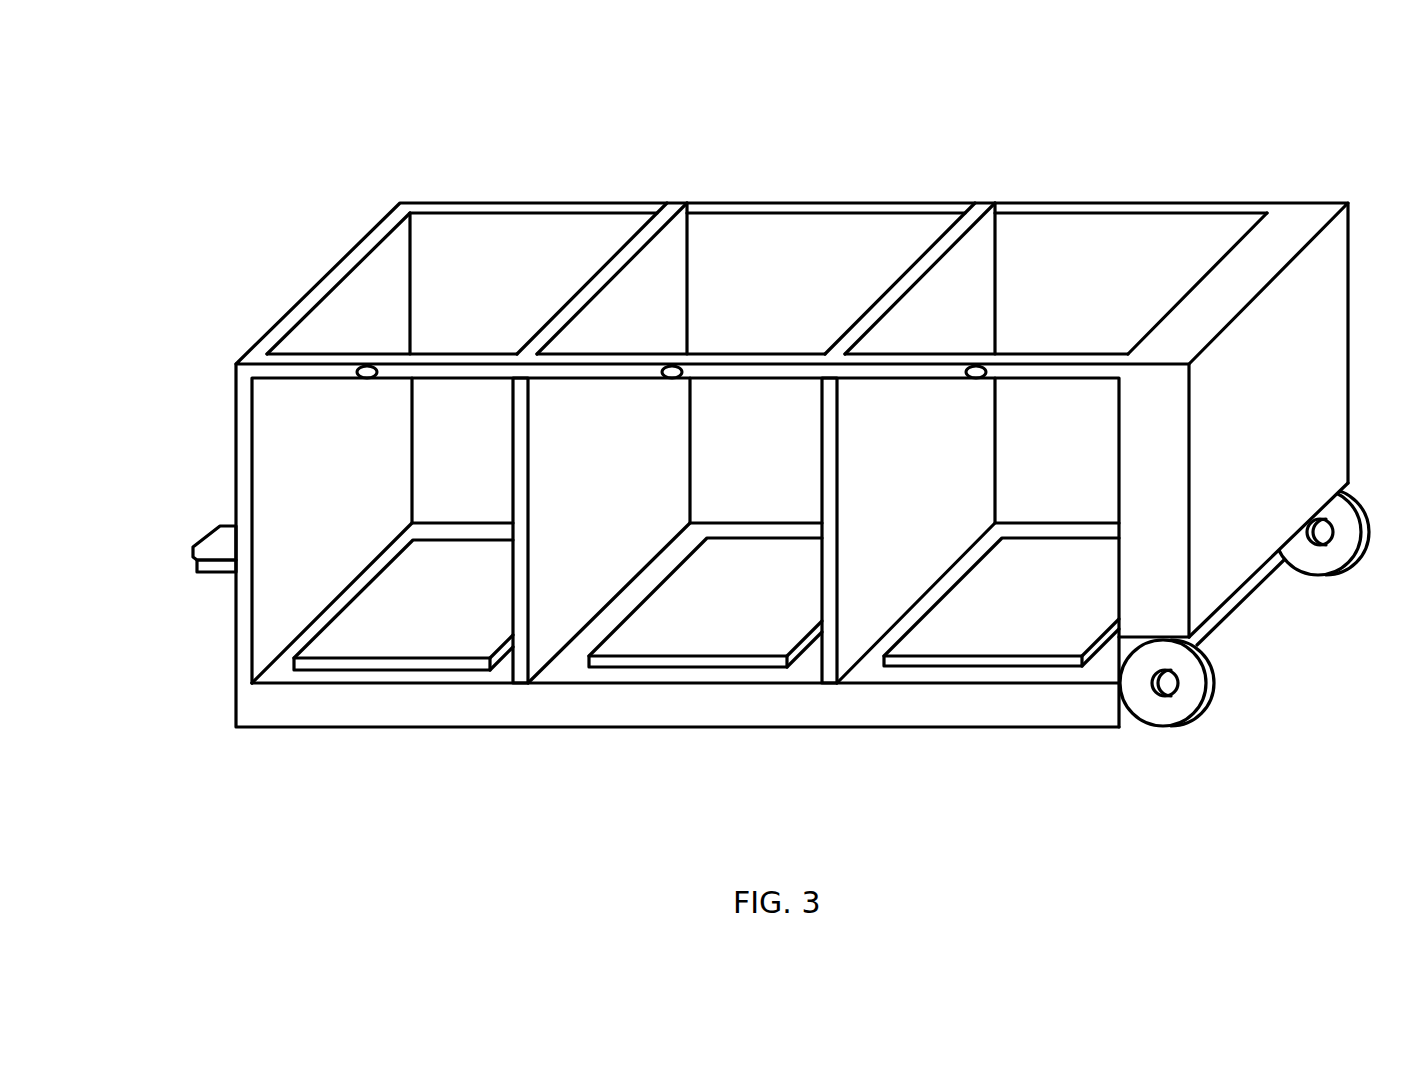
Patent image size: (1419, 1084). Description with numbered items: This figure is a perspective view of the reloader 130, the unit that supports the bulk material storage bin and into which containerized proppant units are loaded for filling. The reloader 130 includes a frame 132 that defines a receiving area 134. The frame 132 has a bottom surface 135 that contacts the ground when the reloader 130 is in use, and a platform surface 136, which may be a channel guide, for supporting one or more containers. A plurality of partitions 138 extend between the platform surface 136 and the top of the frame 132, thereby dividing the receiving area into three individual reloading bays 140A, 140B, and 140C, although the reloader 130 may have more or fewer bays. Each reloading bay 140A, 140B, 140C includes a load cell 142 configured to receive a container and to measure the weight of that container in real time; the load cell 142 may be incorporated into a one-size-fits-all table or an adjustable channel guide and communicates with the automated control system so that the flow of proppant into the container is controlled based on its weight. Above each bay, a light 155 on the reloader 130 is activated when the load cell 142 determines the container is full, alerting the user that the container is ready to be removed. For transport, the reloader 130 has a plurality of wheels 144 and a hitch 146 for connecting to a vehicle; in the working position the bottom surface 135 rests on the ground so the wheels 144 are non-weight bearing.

The reloader 130 is at (1361, 168).
The frame 132 is at (293, 306).
The receiving area 134 is at (220, 588).
The bottom surface 135 is at (979, 730).
The platform surface 136 is at (810, 668).
The partition 138 is at (634, 457).
The reloading bay 140A is at (263, 636).
The reloading bay 140B is at (557, 686).
The reloading bay 140C is at (865, 683).
The load cell 142 is at (428, 630).
The wheels 144 is at (1217, 686).
The hitch 146 is at (203, 535).
The light 155 is at (368, 368).